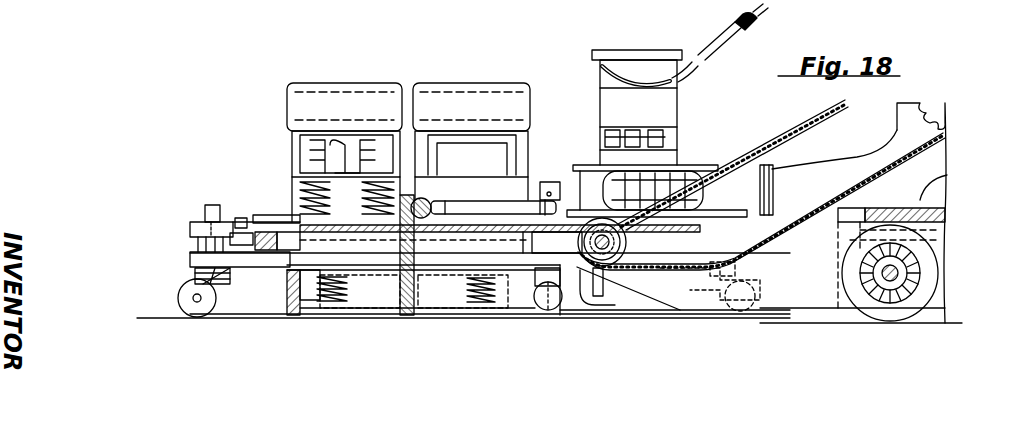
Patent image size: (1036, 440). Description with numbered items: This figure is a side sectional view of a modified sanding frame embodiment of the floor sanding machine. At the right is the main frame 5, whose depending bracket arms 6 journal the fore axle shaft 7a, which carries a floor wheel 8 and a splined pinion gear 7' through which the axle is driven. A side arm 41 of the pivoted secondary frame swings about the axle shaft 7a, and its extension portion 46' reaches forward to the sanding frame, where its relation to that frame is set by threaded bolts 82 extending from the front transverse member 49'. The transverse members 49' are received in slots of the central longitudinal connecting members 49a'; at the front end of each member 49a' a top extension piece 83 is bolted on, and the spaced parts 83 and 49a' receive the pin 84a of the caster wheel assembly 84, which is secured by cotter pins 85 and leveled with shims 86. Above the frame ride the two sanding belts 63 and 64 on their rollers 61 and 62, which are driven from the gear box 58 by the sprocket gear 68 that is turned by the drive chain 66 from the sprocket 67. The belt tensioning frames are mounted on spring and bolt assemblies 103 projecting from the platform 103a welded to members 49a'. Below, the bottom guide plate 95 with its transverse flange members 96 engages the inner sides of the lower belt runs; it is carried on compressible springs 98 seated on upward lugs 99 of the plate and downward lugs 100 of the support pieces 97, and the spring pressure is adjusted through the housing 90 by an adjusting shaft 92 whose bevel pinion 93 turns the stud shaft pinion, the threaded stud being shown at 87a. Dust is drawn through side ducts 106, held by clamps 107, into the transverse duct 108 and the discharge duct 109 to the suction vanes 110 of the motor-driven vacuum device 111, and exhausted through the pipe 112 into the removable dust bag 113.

The main frame 5 is at (948, 178).
The bracket arms 6 is at (950, 226).
The pinion gear 7' is at (920, 273).
The axle shaft 7a is at (874, 273).
The floor wheels 8 is at (935, 254).
The side arms 41 is at (938, 318).
The longitudinally extending members 46' is at (787, 334).
The transverse members 49' is at (274, 217).
The longitudinal connecting members 49a' is at (193, 254).
The gear box 58 is at (605, 292).
The sander roller 61 is at (492, 161).
The sander roller 62 is at (300, 130).
The sanding belt 63 is at (480, 88).
The sanding belt 64 is at (362, 86).
The drive chain 66 is at (864, 194).
The sprocket 67 is at (946, 130).
The sprocket gear 68 is at (554, 244).
The threaded bolts 82 is at (241, 218).
The top extension piece 83 is at (190, 227).
The caster wheel assembly 84 is at (208, 302).
The pin 84a is at (210, 205).
The cotter pins 85 is at (205, 212).
The shims 86 is at (195, 275).
The housing 87a is at (354, 283).
The housing 90 is at (520, 201).
The adjusting shaft 92 is at (553, 182).
The bevel pinion 93 is at (445, 194).
The guide plate 95 is at (287, 310).
The transverse flange members 96 is at (535, 315).
The support pieces 97 is at (300, 281).
The compressible springs 98 is at (482, 304).
The lugs 99 is at (332, 302).
The lugs 100 is at (467, 290).
The spring and bolt assemblies 103 is at (346, 199).
The platform 103a is at (318, 235).
The side ducts 106 is at (650, 318).
The clamps 107 is at (549, 305).
The transverse duct 108 is at (590, 308).
The discharge duct 109 is at (650, 300).
The suction vanes 110 is at (685, 182).
The vacuum device 111 is at (680, 106).
The exhaust pipe 112 is at (745, 180).
The dust bag 113 is at (897, 130).